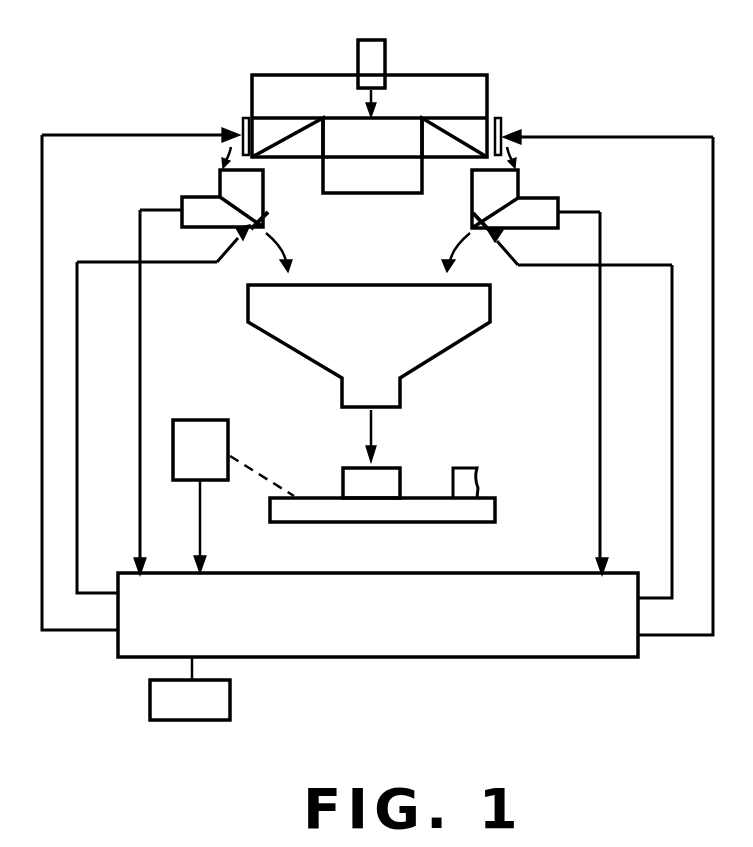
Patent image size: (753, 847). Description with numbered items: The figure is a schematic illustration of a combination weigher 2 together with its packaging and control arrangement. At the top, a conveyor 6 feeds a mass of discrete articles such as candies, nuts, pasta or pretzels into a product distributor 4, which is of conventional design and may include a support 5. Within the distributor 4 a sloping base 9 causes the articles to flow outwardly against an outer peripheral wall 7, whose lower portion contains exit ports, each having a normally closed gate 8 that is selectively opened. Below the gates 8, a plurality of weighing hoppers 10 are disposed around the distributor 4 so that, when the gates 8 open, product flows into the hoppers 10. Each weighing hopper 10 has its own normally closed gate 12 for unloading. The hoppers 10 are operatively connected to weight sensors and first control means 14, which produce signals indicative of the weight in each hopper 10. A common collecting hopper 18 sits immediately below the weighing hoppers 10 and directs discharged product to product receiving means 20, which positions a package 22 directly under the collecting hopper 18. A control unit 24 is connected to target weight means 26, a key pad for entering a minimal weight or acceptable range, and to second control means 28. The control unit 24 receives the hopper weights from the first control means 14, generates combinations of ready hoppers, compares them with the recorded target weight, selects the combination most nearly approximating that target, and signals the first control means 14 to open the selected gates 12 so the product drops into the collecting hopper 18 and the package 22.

The combination weigher 2 is at (622, 124).
The product distributor 4 is at (297, 73).
The support 5 is at (376, 195).
The conveyor 6 is at (386, 58).
The outer peripheral wall 7 is at (493, 96).
The gate 8 is at (240, 116).
The sloping base 9 is at (297, 100).
The weighing hopper 10 is at (264, 204).
The gate 12 is at (270, 226).
The first control means 14 is at (205, 196).
The collecting hopper 18 is at (453, 346).
The product receiving means 20 is at (444, 524).
The package 22 is at (340, 468).
The control unit 24 is at (470, 660).
The target weight means 26 is at (235, 704).
The second control means 28 is at (214, 420).